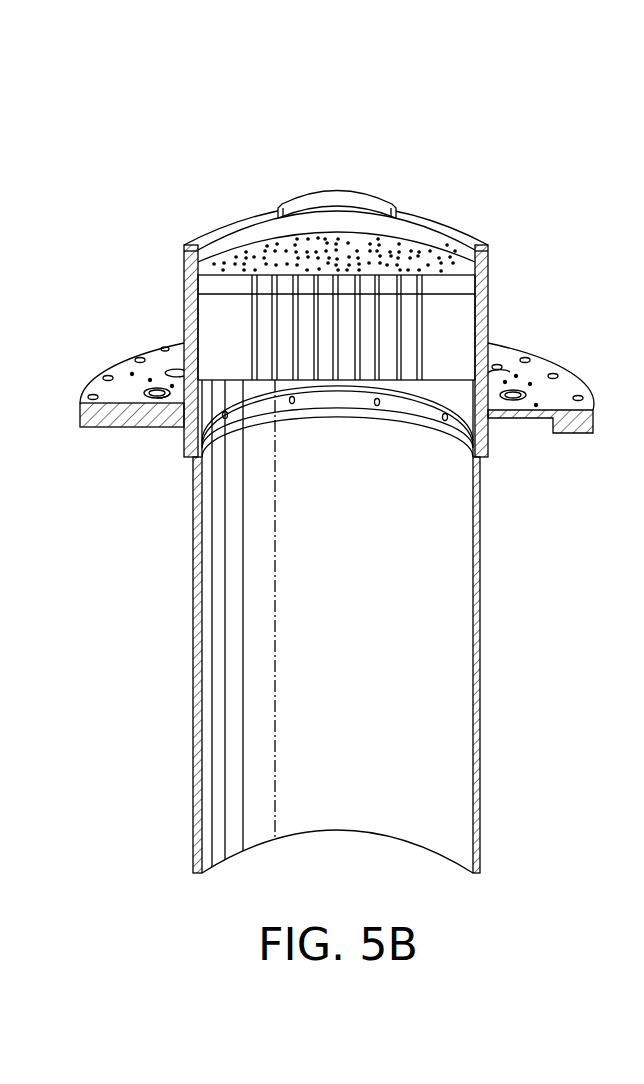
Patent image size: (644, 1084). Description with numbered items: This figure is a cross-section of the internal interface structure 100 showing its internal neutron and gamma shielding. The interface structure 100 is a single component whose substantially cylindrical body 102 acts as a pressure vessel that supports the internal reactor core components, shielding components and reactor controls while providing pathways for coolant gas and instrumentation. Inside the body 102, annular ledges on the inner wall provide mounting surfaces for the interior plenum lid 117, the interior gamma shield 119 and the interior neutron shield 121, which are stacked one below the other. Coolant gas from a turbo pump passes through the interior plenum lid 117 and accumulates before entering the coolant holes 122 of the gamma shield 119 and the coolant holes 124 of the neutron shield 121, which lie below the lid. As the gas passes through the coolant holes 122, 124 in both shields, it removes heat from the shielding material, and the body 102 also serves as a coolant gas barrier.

The internal interface structure 100 is at (338, 559).
The cylindrical body 102 is at (498, 668).
The interior plenum lid 117 is at (397, 180).
The interior gamma shield 119 is at (231, 256).
The interior neutron shield 121 is at (453, 351).
The coolant holes 122 is at (444, 252).
The coolant holes 124 is at (236, 328).